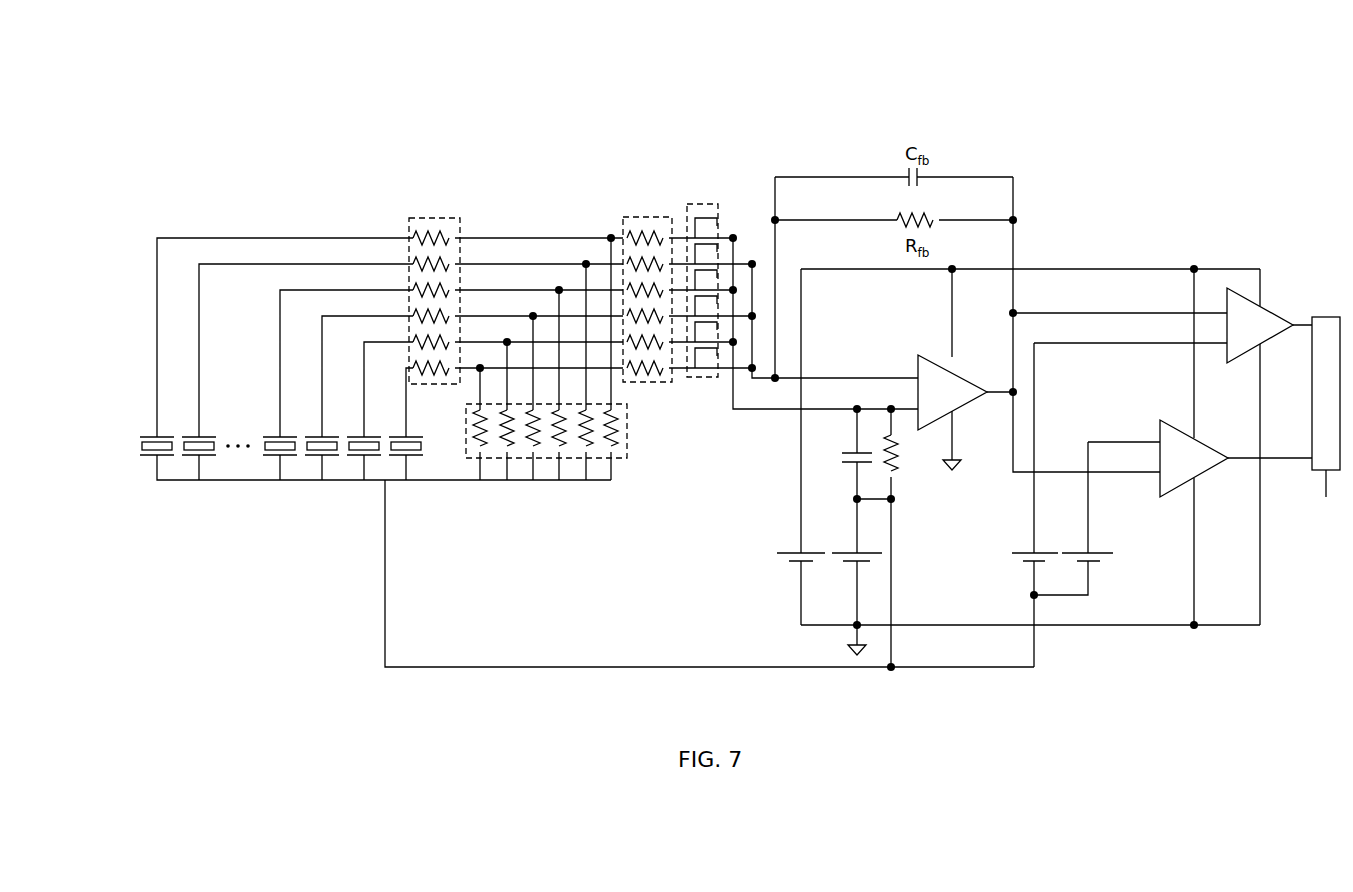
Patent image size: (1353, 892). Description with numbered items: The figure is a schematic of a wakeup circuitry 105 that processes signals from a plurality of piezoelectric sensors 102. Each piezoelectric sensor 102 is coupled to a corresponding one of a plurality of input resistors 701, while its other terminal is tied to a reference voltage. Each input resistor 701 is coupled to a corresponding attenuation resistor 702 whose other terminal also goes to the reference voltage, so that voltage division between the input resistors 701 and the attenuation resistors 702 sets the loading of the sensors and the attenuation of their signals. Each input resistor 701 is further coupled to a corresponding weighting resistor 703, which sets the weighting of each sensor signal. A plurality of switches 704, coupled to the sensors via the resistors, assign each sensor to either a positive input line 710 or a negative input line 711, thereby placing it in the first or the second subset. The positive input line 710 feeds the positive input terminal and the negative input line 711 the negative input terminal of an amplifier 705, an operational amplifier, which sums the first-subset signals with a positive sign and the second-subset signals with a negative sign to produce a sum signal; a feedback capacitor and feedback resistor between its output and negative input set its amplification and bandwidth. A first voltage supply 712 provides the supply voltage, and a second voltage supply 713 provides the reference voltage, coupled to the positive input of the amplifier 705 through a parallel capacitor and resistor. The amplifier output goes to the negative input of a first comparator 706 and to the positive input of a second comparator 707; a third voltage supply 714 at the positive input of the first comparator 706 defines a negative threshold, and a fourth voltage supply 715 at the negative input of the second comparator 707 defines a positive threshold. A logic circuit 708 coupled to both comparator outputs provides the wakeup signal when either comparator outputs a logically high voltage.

The piezoelectric sensors 102 is at (128, 443).
The wakeup circuitry 105 is at (324, 158).
The input resistors 701 is at (415, 215).
The attenuation resistors 702 is at (627, 428).
The weighting resistors 703 is at (625, 215).
The switches 704 is at (703, 202).
The amplifier 705 is at (912, 355).
The first comparator 706 is at (1297, 322).
The second comparator 707 is at (1162, 495).
The logic circuit 708 is at (1340, 313).
The positive input line 710 is at (757, 411).
The negative input line 711 is at (817, 378).
The first voltage supply 712 is at (777, 553).
The second voltage supply 713 is at (828, 553).
The third voltage supply 714 is at (1012, 552).
The fourth voltage supply 715 is at (1065, 552).